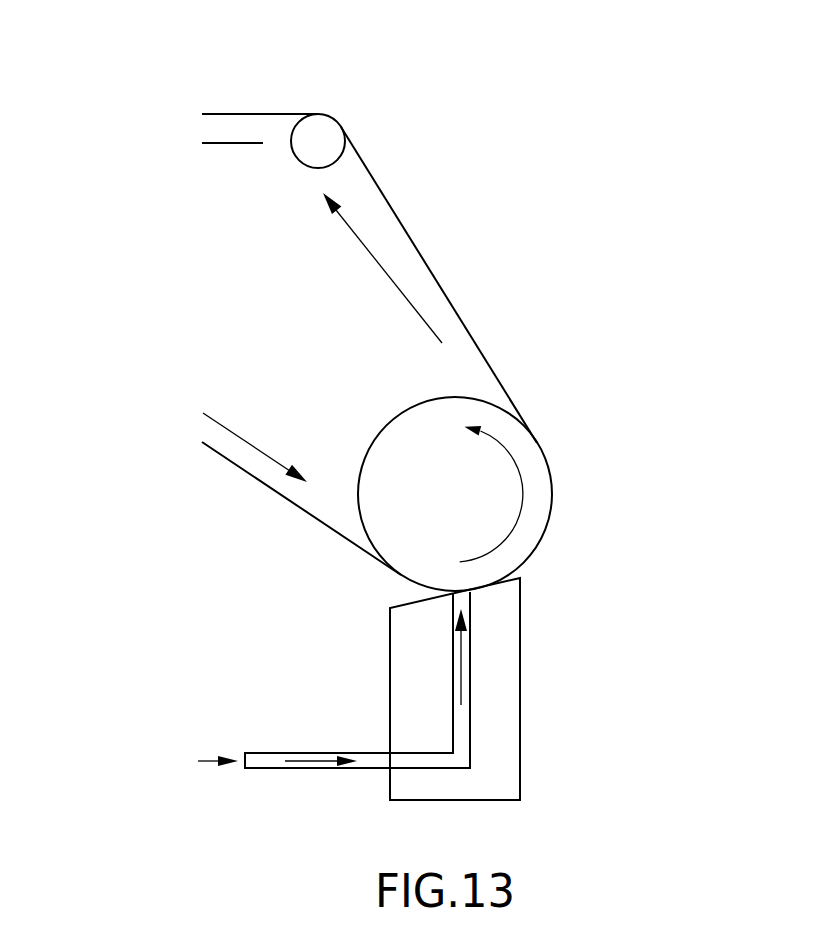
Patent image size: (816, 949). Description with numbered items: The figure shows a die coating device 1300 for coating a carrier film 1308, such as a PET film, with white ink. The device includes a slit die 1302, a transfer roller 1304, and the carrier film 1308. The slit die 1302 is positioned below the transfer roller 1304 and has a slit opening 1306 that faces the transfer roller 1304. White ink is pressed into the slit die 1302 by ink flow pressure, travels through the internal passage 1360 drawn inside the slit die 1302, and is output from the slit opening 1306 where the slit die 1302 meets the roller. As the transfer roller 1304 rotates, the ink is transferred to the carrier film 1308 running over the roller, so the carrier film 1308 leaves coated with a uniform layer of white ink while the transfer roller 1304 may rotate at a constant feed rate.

The die coating device 1300 is at (660, 91).
The slit die 1302 is at (520, 725).
The transfer roller 1304 is at (522, 470).
The slit opening 1306 is at (536, 571).
The carrier film 1308 is at (452, 303).
The fluid channel 1360 is at (384, 753).